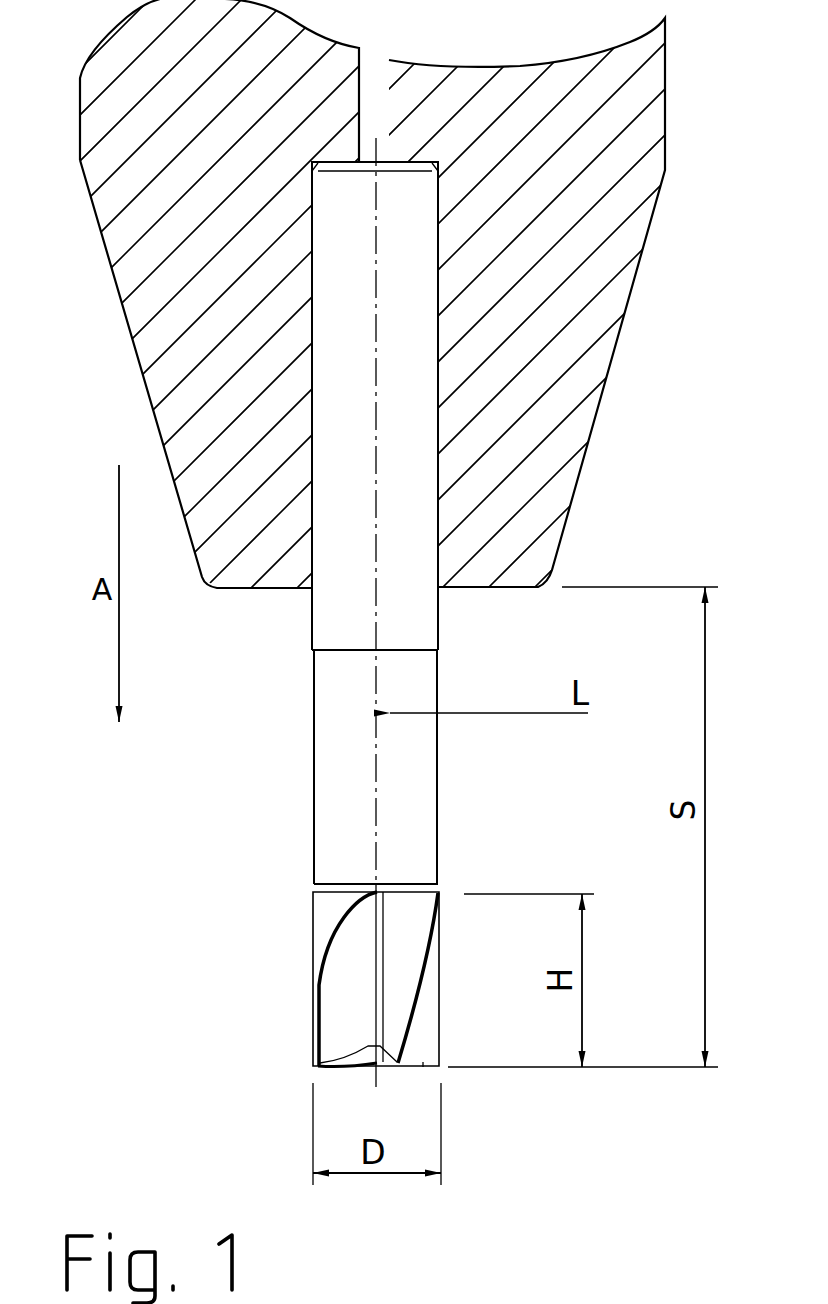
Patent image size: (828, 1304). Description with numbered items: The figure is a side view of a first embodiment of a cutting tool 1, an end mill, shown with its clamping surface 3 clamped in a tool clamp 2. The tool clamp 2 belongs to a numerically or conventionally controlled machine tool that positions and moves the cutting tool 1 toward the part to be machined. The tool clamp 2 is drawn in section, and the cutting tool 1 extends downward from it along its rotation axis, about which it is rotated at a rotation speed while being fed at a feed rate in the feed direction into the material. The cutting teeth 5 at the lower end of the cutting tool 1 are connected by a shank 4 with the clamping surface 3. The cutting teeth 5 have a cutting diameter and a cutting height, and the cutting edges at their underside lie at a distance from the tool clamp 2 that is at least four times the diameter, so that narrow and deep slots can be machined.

The cutting tool 1 is at (350, 612).
The tool clamp 2 is at (610, 378).
The clamping surface 3 is at (443, 637).
The shank 4 is at (443, 810).
The cutting teeth 5 is at (340, 1000).